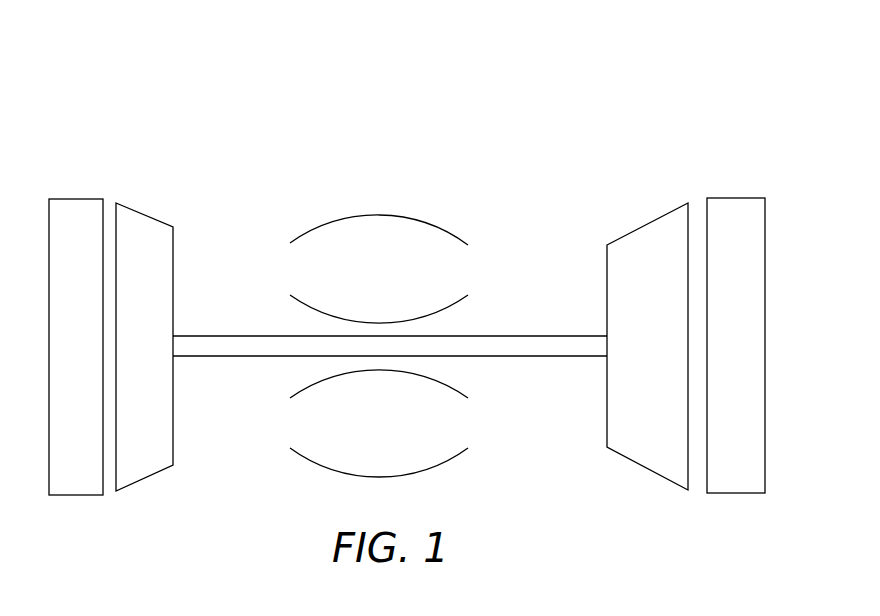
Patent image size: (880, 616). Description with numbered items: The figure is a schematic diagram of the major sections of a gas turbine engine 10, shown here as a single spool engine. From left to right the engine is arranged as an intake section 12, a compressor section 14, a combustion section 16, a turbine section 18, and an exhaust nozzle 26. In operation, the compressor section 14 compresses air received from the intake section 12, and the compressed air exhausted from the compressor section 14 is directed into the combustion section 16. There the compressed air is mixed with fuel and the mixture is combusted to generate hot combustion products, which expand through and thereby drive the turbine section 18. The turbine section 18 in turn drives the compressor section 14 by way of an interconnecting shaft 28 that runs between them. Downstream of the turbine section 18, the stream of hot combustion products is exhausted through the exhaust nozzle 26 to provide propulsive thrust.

The gas turbine engine 10 is at (456, 90).
The intake section 12 is at (70, 220).
The compressor section 14 is at (143, 237).
The combustion section 16 is at (385, 240).
The turbine section 18 is at (643, 237).
The exhaust nozzle 26 is at (733, 210).
The interconnecting shaft 28 is at (521, 338).